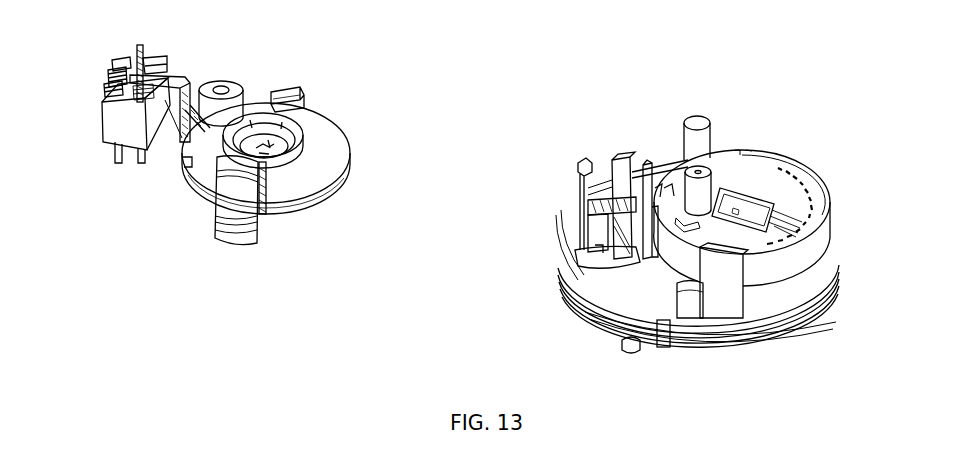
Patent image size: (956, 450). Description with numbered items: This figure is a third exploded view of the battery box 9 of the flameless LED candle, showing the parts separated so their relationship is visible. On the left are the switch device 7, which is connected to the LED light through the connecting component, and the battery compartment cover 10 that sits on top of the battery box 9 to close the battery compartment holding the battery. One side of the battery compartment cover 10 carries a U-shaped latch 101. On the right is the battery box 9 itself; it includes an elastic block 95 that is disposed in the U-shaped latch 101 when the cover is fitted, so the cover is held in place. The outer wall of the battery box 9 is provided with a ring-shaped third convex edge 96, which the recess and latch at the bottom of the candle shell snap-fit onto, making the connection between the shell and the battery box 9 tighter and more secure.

The switch device 7 is at (117, 125).
The battery compartment cover 10 is at (335, 167).
The U-shaped latch 101 is at (235, 197).
The battery box 9 is at (838, 248).
The elastic block 95 is at (777, 327).
The third convex edge 96 is at (583, 313).